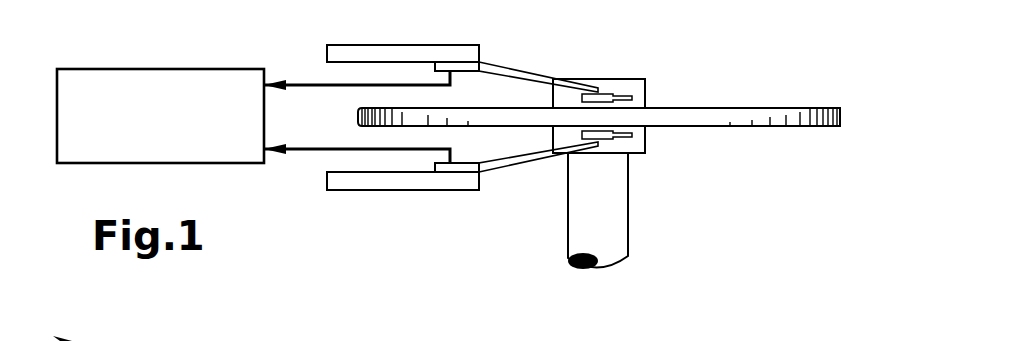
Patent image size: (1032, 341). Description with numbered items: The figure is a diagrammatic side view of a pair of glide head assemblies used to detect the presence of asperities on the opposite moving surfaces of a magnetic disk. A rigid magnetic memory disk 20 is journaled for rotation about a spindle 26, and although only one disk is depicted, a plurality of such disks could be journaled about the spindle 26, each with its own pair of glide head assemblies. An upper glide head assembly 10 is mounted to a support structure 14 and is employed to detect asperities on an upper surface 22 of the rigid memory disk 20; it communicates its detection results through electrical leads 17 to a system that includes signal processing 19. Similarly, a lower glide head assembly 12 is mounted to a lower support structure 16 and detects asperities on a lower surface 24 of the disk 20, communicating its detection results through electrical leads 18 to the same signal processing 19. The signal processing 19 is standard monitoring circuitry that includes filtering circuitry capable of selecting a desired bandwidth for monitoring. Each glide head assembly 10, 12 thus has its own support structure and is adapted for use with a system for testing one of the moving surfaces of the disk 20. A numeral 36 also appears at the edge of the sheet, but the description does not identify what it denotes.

The upper glide head assembly 10 is at (547, 52).
The lower glide head assembly 12 is at (543, 202).
The support structure 14 is at (410, 53).
The lower support structure 16 is at (355, 183).
The electrical leads 17 is at (310, 83).
The electrical leads 18 is at (300, 150).
The signal processing 19 is at (115, 69).
The rigid magnetic memory disk 20 is at (808, 128).
The upper surface 22 is at (712, 106).
The lower surface 24 is at (687, 128).
The spindle 26 is at (615, 230).
The element of adjacent figure 36 is at (233, 340).